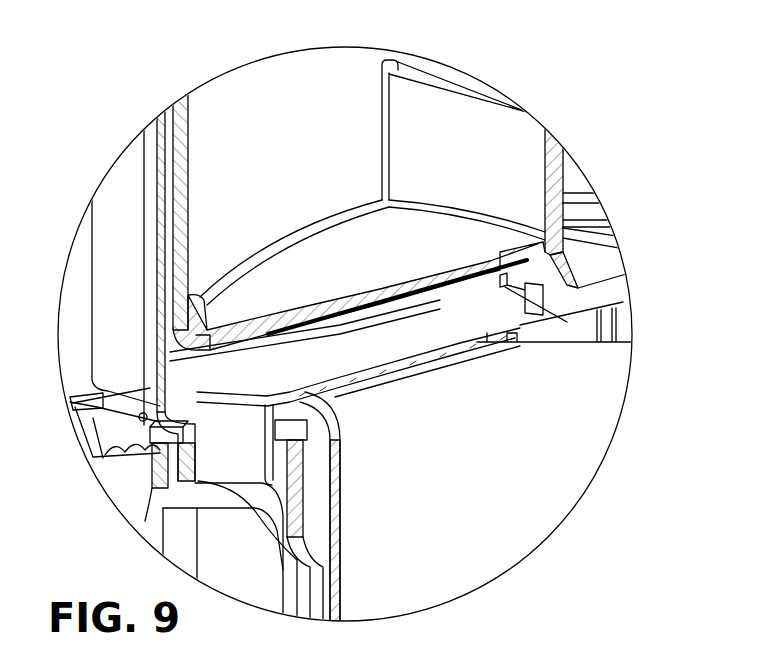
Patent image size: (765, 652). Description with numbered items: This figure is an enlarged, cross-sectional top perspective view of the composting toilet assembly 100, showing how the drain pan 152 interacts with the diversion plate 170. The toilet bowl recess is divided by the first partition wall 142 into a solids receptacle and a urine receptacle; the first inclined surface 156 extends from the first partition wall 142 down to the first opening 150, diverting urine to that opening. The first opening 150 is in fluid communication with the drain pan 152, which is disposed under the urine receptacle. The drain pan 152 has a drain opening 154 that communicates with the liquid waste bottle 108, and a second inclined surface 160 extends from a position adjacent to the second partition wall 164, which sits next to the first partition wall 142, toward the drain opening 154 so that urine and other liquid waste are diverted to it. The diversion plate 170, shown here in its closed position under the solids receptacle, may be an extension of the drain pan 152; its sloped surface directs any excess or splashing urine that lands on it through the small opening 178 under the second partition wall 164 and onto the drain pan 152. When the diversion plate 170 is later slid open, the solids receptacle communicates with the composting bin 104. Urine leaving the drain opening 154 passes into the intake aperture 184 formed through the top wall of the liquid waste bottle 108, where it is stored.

The composting toilet assembly 100 is at (520, 126).
The composting bin 104 is at (568, 491).
The liquid waste bottle 108 is at (245, 582).
The first partition wall 142 is at (412, 110).
The first opening 150 is at (203, 298).
The drain pan 152 is at (440, 343).
The drain opening 154 is at (203, 457).
The first inclined surface 156 is at (345, 250).
The second inclined surface 160 is at (343, 367).
The second partition wall 164 is at (570, 270).
The diversion plate 170 is at (613, 282).
The small opening 178 is at (530, 314).
The intake aperture 184 is at (173, 486).